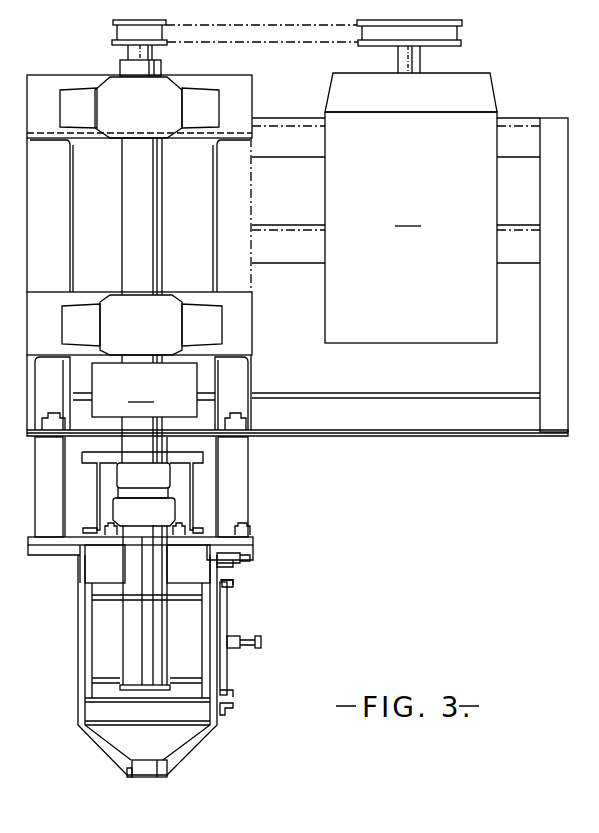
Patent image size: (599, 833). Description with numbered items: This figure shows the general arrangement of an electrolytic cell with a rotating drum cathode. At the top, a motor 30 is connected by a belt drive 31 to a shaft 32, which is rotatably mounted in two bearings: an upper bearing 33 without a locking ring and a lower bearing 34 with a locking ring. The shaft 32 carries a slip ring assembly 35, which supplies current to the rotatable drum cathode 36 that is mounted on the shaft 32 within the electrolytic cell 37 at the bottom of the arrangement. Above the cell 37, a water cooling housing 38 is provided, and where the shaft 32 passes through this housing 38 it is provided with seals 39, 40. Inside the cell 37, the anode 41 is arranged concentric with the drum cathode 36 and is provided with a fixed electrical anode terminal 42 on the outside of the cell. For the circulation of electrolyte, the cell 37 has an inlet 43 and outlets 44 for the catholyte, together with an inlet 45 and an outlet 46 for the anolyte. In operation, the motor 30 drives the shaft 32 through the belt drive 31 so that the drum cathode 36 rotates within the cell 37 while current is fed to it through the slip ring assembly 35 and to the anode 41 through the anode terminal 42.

The motor 30 is at (411, 208).
The belt drive 31 is at (304, 33).
The shaft 32 is at (133, 212).
The bearing 33 is at (128, 122).
The bearing 34 is at (120, 305).
The slip ring assembly 35 is at (144, 390).
The drum cathode 36 is at (112, 615).
The electrolytic cell 37 is at (82, 665).
The water cooling housing 38 is at (197, 508).
The seal 39 is at (128, 480).
The seal 40 is at (125, 510).
The anode 41 is at (227, 619).
The anode terminal 42 is at (262, 643).
The inlet 43 is at (145, 777).
The outlets 44 is at (78, 563).
The inlet 45 is at (233, 697).
The outlet 46 is at (227, 582).